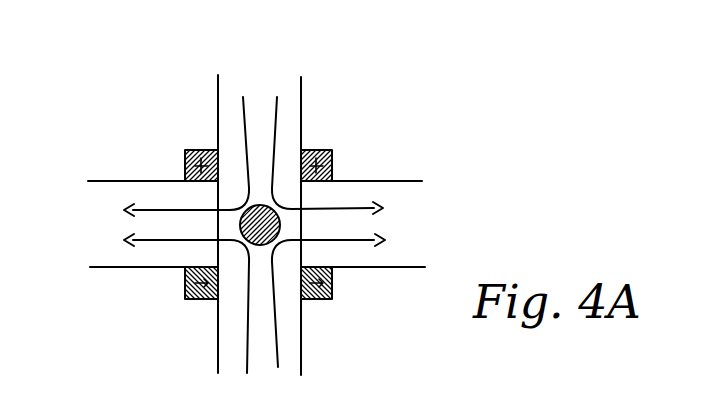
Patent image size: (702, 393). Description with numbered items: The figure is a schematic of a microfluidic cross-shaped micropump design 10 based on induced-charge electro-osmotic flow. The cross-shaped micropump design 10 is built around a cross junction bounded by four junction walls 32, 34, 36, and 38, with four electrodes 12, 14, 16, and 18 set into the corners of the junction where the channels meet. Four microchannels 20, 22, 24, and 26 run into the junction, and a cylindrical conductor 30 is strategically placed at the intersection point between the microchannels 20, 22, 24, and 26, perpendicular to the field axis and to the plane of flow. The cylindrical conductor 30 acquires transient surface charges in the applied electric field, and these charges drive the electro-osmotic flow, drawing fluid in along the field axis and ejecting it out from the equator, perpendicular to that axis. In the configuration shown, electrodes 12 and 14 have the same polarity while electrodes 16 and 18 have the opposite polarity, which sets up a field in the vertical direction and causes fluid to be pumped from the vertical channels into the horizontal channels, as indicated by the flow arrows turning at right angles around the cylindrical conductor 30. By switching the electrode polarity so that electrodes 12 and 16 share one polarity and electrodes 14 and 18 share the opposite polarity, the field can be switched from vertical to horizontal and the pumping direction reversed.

The cross-shaped micropump design 10 is at (302, 52).
The electrode 12 is at (195, 150).
The electrode 14 is at (314, 150).
The electrode 16 is at (185, 300).
The electrode 18 is at (333, 299).
The microchannel 20 is at (237, 102).
The microchannel 22 is at (98, 207).
The microchannel 24 is at (408, 206).
The microchannel 26 is at (223, 350).
The cylindrical conductor 30 is at (279, 212).
The junction wall 32 is at (123, 115).
The junction wall 34 is at (123, 275).
The junction wall 36 is at (385, 110).
The junction wall 38 is at (387, 270).